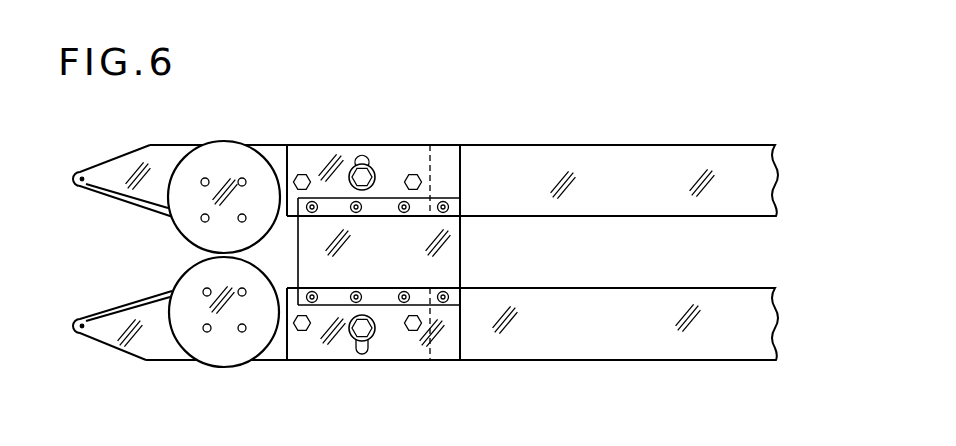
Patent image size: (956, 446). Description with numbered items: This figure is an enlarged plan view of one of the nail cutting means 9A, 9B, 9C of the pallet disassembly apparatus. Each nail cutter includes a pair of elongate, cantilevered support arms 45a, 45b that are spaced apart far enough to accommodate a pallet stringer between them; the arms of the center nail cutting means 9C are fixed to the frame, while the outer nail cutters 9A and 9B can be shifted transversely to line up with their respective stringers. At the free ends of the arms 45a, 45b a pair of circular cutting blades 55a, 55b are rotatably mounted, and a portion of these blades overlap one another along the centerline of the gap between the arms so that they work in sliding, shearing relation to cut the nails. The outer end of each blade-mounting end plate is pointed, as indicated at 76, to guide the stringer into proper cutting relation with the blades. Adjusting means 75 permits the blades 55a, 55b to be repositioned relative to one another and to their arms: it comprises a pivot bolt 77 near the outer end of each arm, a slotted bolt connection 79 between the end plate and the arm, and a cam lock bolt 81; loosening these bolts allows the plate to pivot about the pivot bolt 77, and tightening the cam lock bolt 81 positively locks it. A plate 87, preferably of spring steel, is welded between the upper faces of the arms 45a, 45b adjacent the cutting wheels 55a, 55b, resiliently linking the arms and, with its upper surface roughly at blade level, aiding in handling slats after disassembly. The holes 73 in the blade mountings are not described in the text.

The nail cutting means 9A is at (513, 207).
The nail cutting means 9B is at (513, 207).
The center nail cutting means 9C is at (592, 113).
The support arm 45a is at (626, 177).
The support arm 45b is at (607, 333).
The circular cutting blade 55a is at (227, 158).
The circular cutting blade 55b is at (239, 350).
The disc hole 73 is at (203, 220).
The adjusting means 75 is at (366, 376).
The pointed outer end 76 is at (106, 197).
The pivot bolt 77 is at (302, 172).
The slotted bolt connection 79 is at (357, 182).
The cam lock bolt 81 is at (398, 172).
The plate 87 is at (443, 261).